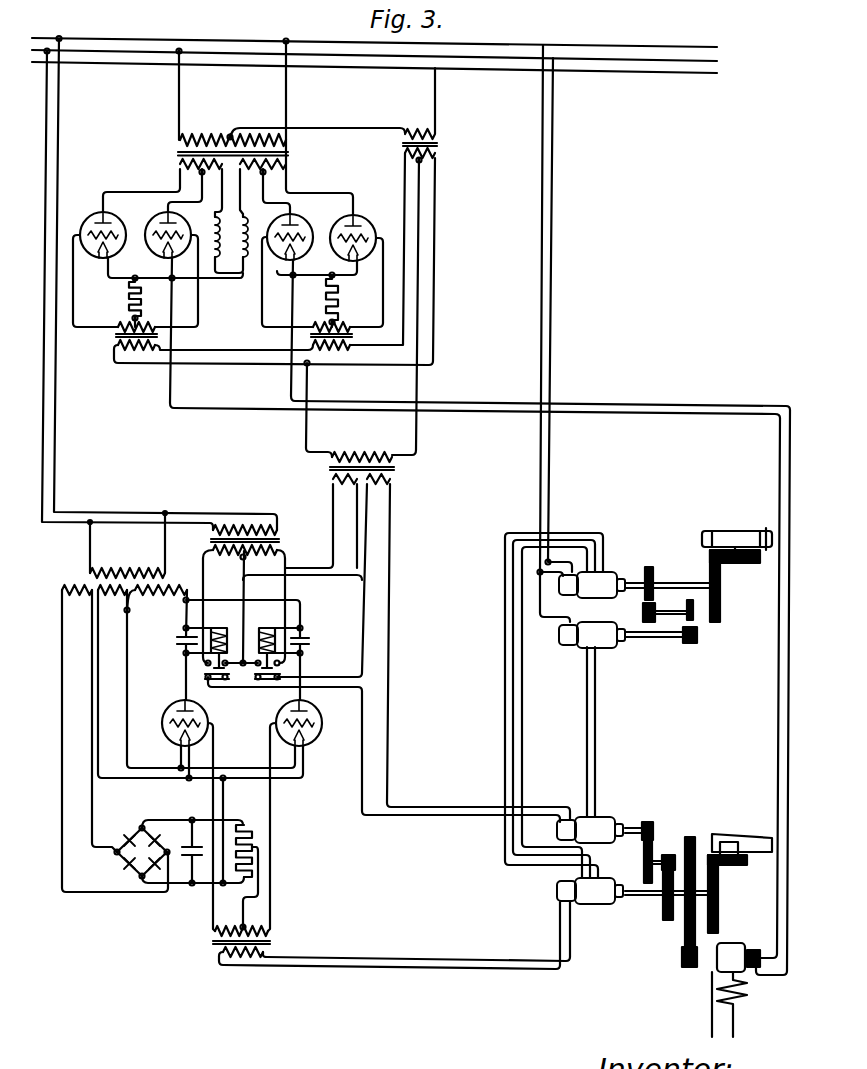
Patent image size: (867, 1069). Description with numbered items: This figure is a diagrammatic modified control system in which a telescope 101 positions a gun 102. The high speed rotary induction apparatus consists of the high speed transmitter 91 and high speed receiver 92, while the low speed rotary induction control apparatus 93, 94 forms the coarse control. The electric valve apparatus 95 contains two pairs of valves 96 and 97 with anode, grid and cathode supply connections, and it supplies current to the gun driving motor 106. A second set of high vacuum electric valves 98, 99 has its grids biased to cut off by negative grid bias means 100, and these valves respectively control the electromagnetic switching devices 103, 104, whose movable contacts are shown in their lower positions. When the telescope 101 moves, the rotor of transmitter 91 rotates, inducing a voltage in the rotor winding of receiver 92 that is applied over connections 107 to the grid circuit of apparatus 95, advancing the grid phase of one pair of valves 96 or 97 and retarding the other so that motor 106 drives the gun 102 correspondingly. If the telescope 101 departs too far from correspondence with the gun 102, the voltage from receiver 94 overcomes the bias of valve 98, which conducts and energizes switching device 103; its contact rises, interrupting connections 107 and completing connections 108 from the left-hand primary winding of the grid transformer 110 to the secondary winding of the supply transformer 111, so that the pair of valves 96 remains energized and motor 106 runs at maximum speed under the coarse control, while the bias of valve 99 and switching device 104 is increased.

The high speed transmitter 91 is at (628, 635).
The high speed receiver 92 is at (616, 850).
The low speed rotary induction control apparatus 93 is at (634, 594).
The low speed receiver 94 is at (633, 902).
The electric valve apparatus 95 is at (341, 175).
The pair of valves 96 is at (124, 225).
The pair of valves 97 is at (306, 226).
The electric valve 98 is at (205, 710).
The electric valve 99 is at (319, 711).
The negative grid bias means 100 is at (157, 807).
The telescope 101 is at (729, 534).
The gun 102 is at (727, 837).
The electromagnetic switching device 103 is at (216, 645).
The electromagnetic switching device 104 is at (267, 645).
The gun driving motor 106 is at (732, 998).
The connections 107 is at (441, 817).
The connections 108 is at (313, 576).
The grid transformer 110 is at (328, 468).
The supply transformer 111 is at (280, 541).